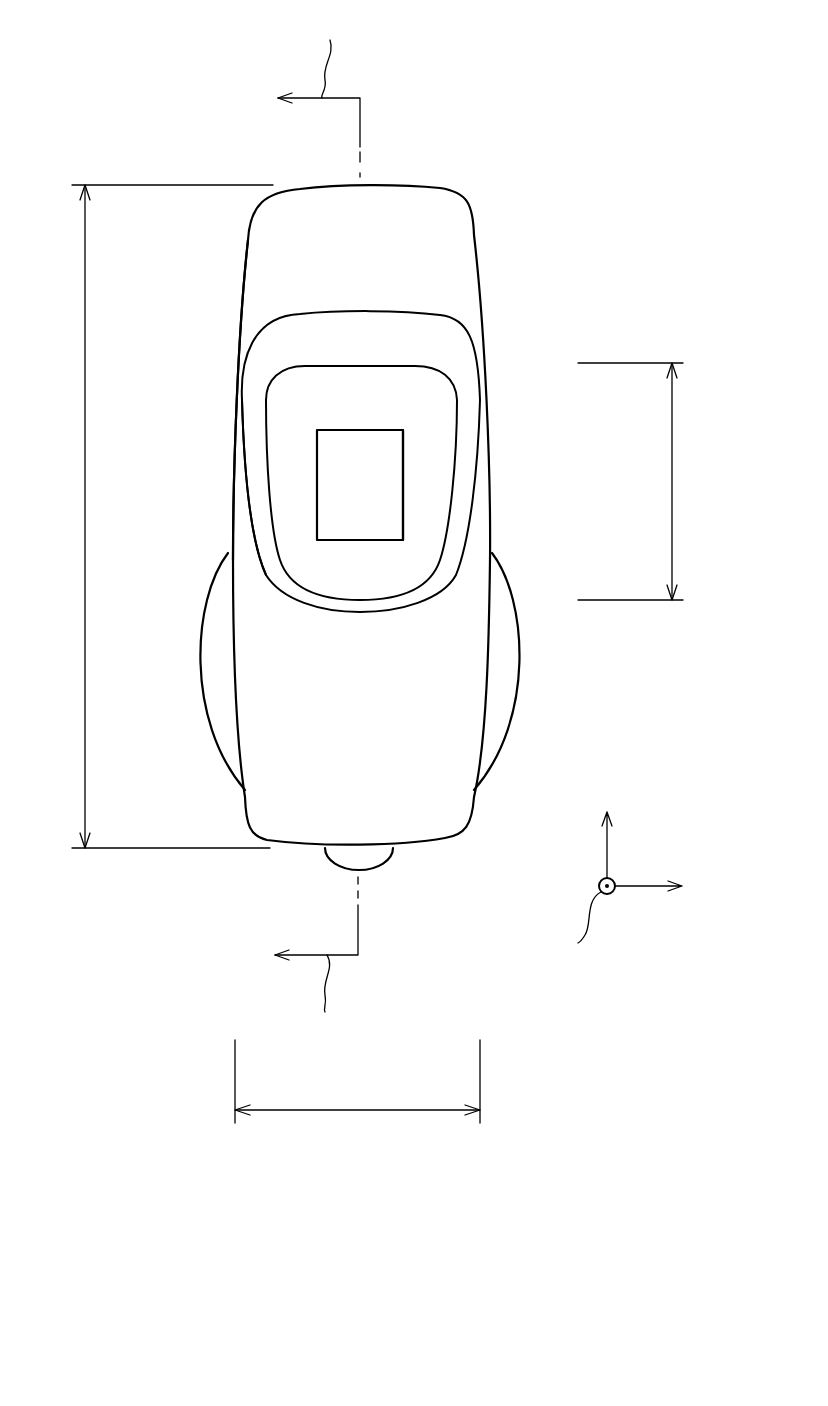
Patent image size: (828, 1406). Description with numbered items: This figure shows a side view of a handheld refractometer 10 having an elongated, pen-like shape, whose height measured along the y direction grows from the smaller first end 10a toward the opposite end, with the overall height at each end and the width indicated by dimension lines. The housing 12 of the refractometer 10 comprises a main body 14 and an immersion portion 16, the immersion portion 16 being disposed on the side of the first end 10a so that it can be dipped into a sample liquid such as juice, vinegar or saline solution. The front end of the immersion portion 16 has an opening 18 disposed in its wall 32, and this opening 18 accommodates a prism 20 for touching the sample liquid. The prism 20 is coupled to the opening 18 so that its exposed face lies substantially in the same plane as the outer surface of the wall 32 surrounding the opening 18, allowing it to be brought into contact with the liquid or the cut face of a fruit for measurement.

The refractometer 10 is at (528, 238).
The first end of the refractometer 10a is at (452, 402).
The housing 12 is at (424, 188).
The main body 14 is at (247, 267).
The immersion portion 16 is at (270, 367).
The opening 18 is at (403, 456).
The prism 20 is at (385, 515).
The wall 32 is at (287, 453).